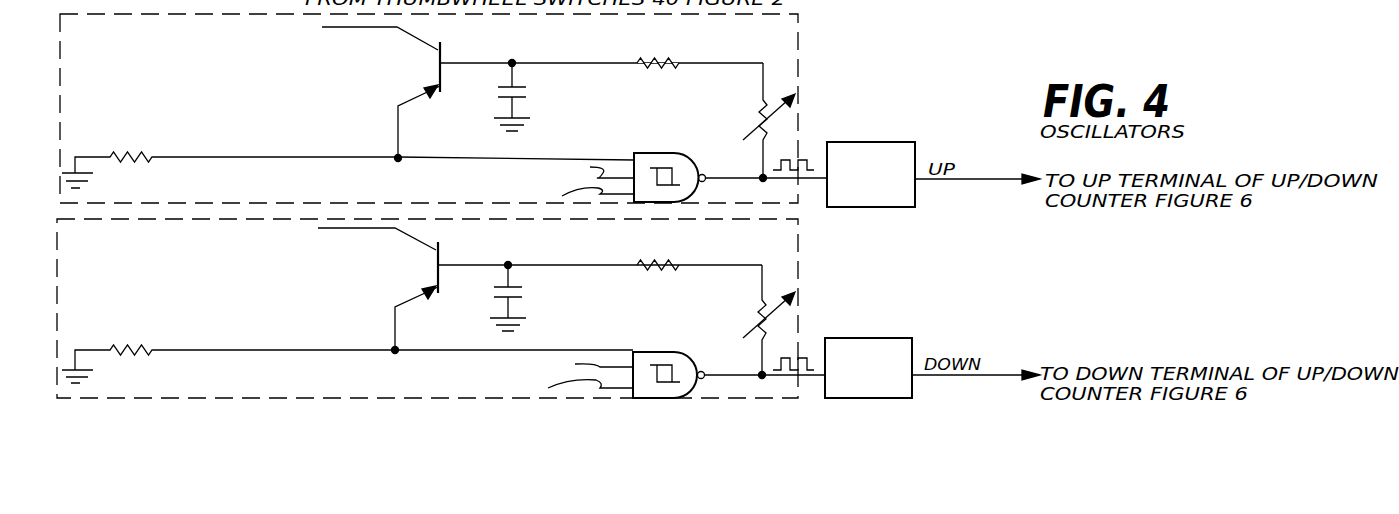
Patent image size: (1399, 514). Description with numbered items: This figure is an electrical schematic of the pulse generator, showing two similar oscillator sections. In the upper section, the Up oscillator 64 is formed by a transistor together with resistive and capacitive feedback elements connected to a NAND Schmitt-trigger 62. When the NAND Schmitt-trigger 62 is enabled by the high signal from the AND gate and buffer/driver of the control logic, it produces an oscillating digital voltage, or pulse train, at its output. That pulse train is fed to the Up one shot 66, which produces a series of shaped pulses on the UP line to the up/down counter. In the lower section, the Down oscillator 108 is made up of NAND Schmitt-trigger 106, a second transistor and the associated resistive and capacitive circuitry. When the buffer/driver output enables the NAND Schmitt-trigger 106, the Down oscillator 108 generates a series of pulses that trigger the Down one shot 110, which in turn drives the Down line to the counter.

The NAND Schmitt-trigger 62 is at (688, 167).
The Up oscillator 64 is at (786, 60).
The Up one shot 66 is at (860, 142).
The NAND Schmitt-trigger 106 is at (690, 366).
The Down oscillator 108 is at (786, 265).
The Down one shot 110 is at (839, 338).